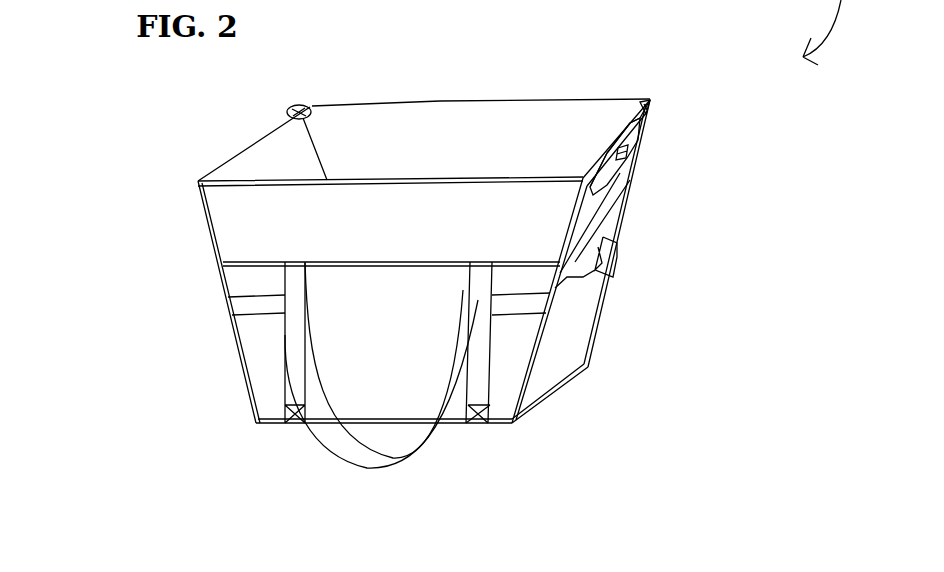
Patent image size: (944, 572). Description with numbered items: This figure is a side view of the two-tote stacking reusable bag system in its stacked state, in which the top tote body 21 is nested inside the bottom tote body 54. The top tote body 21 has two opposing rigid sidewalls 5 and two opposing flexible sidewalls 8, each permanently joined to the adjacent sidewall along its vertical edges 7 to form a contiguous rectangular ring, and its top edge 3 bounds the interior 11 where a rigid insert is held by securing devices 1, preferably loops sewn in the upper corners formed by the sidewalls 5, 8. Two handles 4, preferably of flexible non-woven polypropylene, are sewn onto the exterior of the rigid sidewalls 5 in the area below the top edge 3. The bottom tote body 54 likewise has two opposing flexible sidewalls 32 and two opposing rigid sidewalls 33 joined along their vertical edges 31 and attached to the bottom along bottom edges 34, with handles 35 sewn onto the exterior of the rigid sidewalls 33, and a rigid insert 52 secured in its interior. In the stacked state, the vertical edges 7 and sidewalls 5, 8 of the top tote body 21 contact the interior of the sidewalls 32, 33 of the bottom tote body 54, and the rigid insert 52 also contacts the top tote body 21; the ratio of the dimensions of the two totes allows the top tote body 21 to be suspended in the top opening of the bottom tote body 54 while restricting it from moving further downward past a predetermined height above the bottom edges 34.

The securing device 1 is at (650, 100).
The top edge 3 is at (246, 145).
The handle 4 is at (615, 158).
The rigid sidewall 5 is at (285, 197).
The vertical edge 7 is at (643, 135).
The flexible sidewall 8 is at (600, 197).
The interior 11 is at (412, 120).
The top tote body 21 is at (66, 188).
The vertical edge 31 is at (603, 296).
The flexible sidewall 32 is at (575, 332).
The rigid sidewall 33 is at (263, 342).
The bottom edge 34 is at (560, 385).
The handle 35 is at (428, 438).
The rigid insert 52 is at (598, 265).
The bottom tote body 54 is at (128, 400).